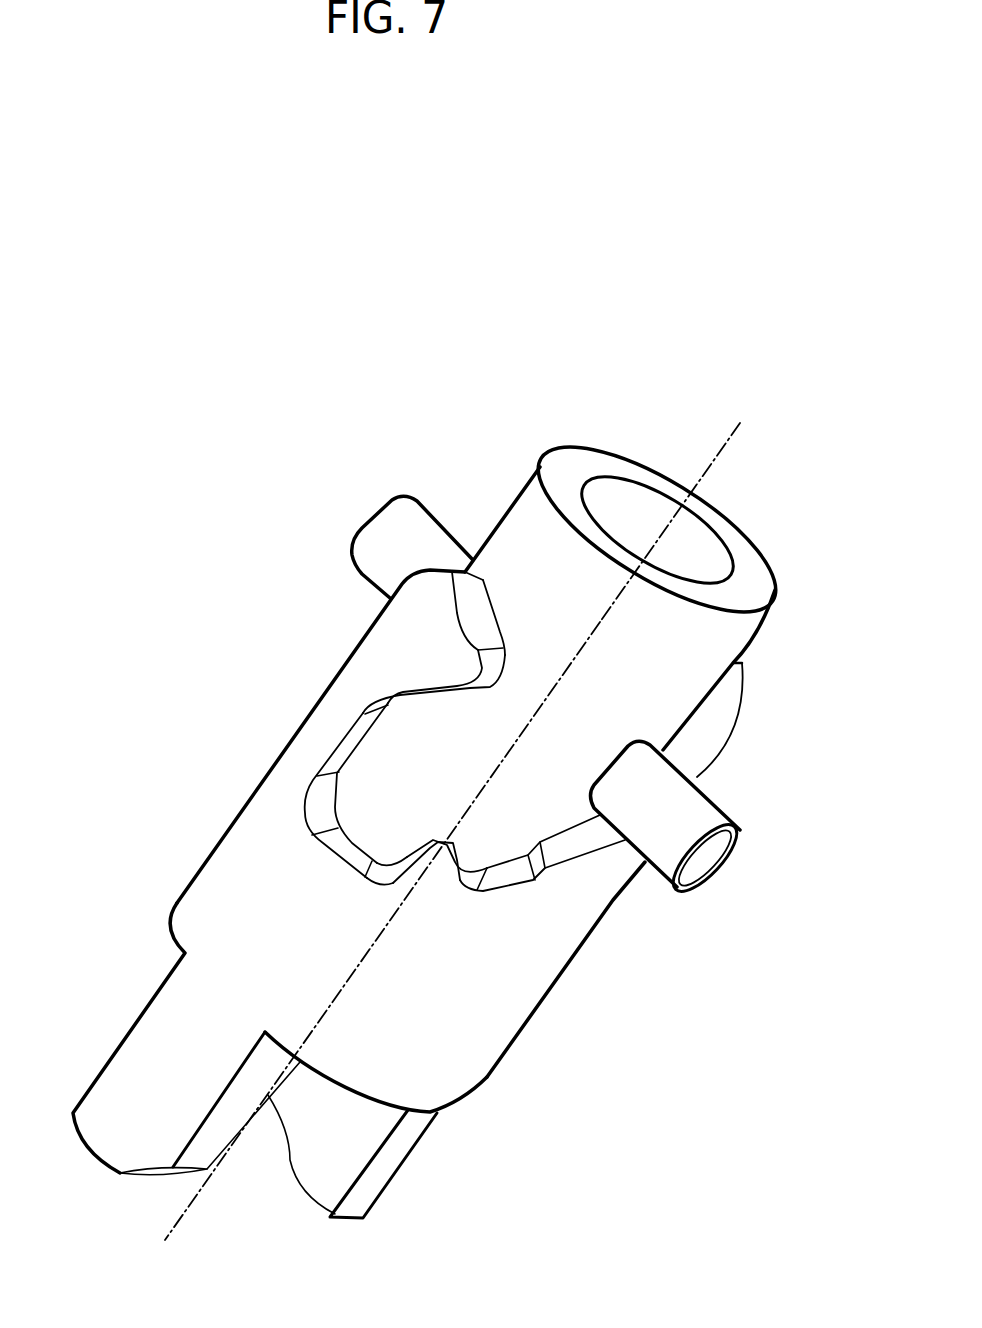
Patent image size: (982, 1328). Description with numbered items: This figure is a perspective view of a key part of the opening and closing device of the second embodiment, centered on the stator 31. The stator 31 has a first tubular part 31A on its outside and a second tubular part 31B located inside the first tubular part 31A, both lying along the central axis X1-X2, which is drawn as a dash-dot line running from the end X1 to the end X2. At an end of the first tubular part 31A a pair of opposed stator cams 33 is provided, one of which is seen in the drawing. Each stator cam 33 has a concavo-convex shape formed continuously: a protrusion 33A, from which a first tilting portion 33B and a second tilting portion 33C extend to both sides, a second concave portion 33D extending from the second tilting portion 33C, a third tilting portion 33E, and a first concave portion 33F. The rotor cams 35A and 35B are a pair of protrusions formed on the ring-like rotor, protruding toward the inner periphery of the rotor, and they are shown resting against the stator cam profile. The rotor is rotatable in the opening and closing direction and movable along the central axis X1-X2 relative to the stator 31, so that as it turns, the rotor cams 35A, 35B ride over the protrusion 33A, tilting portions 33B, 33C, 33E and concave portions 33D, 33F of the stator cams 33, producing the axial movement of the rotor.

The stator 31 is at (262, 757).
The first tubular part 31A is at (265, 890).
The second tubular part 31B is at (535, 533).
The stator cam 33 is at (612, 882).
The protrusion 33A is at (742, 663).
The first tilting portion 33B is at (470, 590).
The second tilting portion 33C is at (712, 722).
The second concave portion 33D is at (515, 878).
The third tilting portion 33E is at (405, 873).
The first concave portion 33F is at (353, 858).
The rotor cam 35A is at (687, 805).
The rotor cam 35B is at (385, 535).
The central axis end X1 is at (358, 967).
The central axis end X2 is at (688, 508).